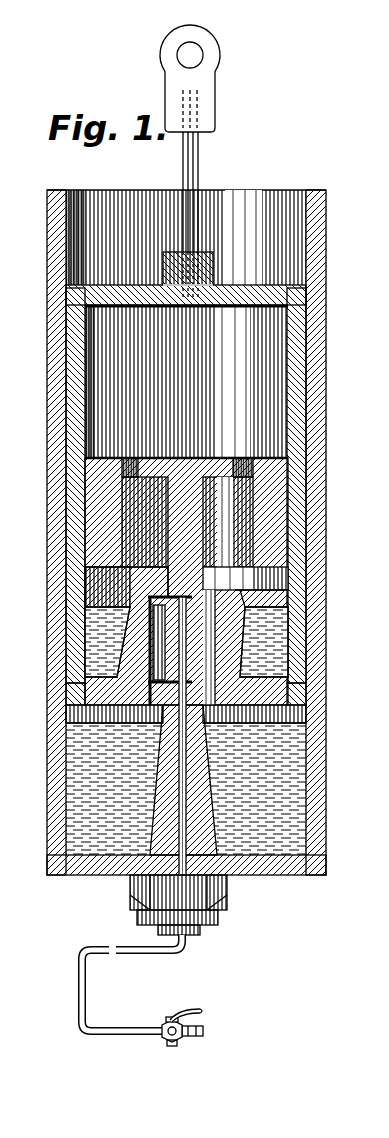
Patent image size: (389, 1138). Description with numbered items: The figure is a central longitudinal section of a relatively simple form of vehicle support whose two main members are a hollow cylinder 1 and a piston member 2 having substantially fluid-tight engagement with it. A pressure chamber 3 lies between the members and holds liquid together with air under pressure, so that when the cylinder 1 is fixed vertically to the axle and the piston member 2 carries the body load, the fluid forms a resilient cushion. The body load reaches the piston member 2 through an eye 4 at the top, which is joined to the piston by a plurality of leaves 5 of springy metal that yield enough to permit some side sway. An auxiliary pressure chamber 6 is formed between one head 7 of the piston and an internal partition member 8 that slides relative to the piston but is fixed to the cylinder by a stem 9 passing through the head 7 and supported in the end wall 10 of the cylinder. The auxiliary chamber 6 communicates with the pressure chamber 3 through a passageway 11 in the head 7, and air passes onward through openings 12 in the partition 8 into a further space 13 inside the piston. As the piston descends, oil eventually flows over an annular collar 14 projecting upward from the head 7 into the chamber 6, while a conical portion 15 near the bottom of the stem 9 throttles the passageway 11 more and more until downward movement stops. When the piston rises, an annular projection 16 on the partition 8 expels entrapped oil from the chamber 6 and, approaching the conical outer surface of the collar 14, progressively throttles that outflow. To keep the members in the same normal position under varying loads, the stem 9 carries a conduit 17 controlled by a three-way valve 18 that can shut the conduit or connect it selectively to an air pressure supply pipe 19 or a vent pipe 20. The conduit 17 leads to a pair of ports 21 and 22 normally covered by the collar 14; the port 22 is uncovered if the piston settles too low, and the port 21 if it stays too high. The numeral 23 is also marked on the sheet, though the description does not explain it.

The hollow cylinder 1 is at (315, 608).
The piston member 2 is at (288, 290).
The pressure chamber 3 is at (277, 712).
The eye 4 is at (207, 92).
The leaves 5 is at (189, 163).
The auxiliary pressure chamber 6 is at (265, 590).
The head 7 is at (270, 690).
The internal partition member 8 is at (232, 485).
The stem 9 is at (190, 548).
The end wall 10 is at (267, 868).
The passageway 11 is at (213, 632).
The openings 12 is at (240, 463).
The space 13 is at (238, 372).
The annular collar 14 is at (130, 630).
The conical portion 15 is at (198, 807).
The annular projection 16 is at (97, 533).
The conduit 17 is at (183, 803).
The three-way valve 18 is at (202, 1010).
The air pressure supply pipe 19 is at (196, 1036).
The vent pipe 20 is at (177, 1044).
The port 21 is at (160, 581).
The port 22 is at (162, 694).
The element 23 is at (383, 375).